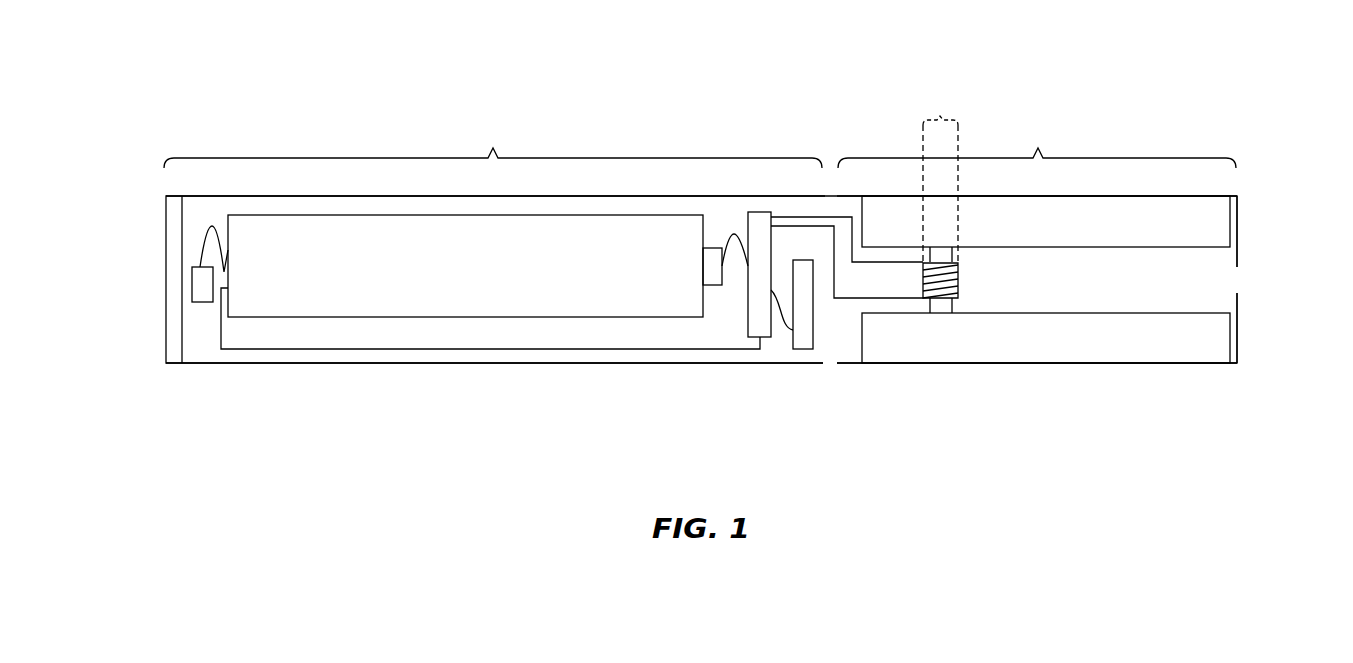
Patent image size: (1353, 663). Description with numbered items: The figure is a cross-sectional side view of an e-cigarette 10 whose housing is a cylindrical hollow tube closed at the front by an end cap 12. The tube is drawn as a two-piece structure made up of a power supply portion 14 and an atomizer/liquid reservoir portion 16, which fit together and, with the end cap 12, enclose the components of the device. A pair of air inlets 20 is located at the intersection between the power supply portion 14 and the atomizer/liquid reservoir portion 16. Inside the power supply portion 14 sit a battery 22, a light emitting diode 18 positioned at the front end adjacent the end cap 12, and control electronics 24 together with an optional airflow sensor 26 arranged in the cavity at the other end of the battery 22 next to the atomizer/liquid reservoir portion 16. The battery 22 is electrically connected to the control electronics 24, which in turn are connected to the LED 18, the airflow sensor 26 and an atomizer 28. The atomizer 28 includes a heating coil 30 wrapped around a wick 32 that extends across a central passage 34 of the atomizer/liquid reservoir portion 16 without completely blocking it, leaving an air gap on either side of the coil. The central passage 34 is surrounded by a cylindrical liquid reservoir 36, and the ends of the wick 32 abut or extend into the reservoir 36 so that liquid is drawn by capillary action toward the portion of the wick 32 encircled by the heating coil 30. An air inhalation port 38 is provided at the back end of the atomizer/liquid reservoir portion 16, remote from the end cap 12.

The e-cigarette 10 is at (614, 66).
The end cap 12 is at (173, 363).
The power supply portion 14 is at (493, 140).
The atomizer/liquid reservoir portion 16 is at (1037, 142).
The light emitting diode 18 is at (200, 302).
The air inlets 20 is at (829, 197).
The battery 22 is at (383, 292).
The control electronics 24 is at (762, 212).
The airflow sensor 26 is at (801, 349).
The atomizer 28 is at (940, 174).
The heating coil 30 is at (955, 298).
The wick 32 is at (938, 313).
The central passage 34 is at (1043, 293).
The cylindrical liquid reservoir 36 is at (1210, 219).
The air inhalation port 38 is at (1237, 280).